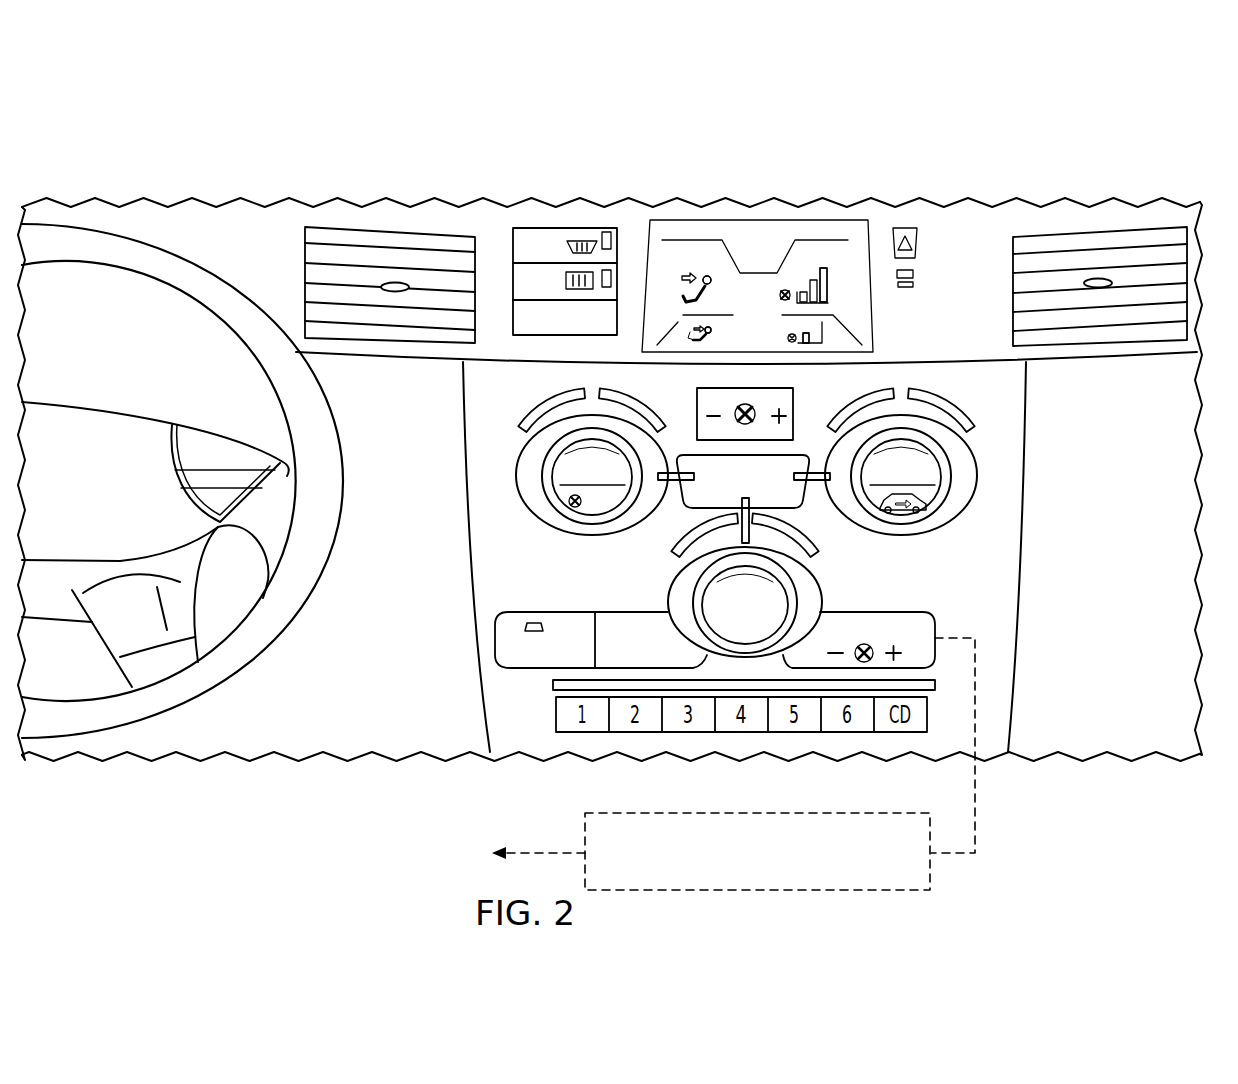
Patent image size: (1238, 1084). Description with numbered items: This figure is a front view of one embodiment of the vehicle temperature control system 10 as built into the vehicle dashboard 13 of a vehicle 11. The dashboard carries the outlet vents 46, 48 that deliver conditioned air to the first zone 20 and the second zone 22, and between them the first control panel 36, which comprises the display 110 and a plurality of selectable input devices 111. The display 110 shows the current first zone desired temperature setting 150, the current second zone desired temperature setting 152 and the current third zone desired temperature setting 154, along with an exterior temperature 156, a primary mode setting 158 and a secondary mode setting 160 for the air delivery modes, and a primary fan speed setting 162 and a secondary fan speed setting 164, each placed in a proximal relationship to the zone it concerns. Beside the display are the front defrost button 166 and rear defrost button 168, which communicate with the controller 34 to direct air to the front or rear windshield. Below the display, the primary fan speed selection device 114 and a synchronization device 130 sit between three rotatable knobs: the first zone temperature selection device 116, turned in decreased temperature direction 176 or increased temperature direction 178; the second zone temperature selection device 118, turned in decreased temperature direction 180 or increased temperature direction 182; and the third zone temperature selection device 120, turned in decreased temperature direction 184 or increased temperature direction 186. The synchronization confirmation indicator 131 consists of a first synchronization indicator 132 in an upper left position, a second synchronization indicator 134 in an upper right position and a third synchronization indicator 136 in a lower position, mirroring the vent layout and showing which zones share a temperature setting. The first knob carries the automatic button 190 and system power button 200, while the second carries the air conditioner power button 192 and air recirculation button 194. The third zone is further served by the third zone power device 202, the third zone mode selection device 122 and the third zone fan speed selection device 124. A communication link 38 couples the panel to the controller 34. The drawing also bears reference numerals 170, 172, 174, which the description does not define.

The vehicle temperature control system 10 is at (272, 150).
The vehicle 11 is at (417, 148).
The vehicle dashboard 13 is at (945, 187).
The first zone 20 is at (230, 756).
The second zone 22 is at (1098, 755).
The controller 34 is at (938, 872).
The first control panel 36 is at (585, 192).
The communication link 38 is at (980, 800).
The outlet vent 46 is at (305, 268).
The outlet vent 48 is at (1012, 262).
The display 110 is at (630, 198).
The selectable input devices 111 is at (492, 193).
The primary fan speed selection device 114 is at (797, 392).
The first zone temperature selection device 116 is at (545, 478).
The second zone temperature selection device 118 is at (952, 480).
The third zone temperature selection device 120 is at (800, 592).
The third zone mode selection device 122 is at (628, 612).
The third zone fan speed selection device 124 is at (935, 615).
The synchronization device 130 is at (800, 455).
The synchronization confirmation indicator 131 is at (665, 418).
The first synchronization indicator 132 is at (672, 472).
The second synchronization indicator 134 is at (810, 505).
The third synchronization indicator 136 is at (738, 512).
The current first zone desired temperature setting 150 is at (657, 237).
The current second zone desired temperature setting 152 is at (850, 243).
The current third zone desired temperature setting 154 is at (745, 340).
The exterior temperature 156 is at (757, 223).
The primary mode setting 158 is at (695, 272).
The secondary mode setting 160 is at (683, 323).
The primary fan speed setting 162 is at (807, 278).
The secondary fan speed setting 164 is at (835, 335).
The front defrost button 166 is at (513, 242).
The rear defrost button 168 is at (513, 290).
The driver control assembly 170 is at (483, 438).
The mode button / passenger control assembly 172 is at (513, 318).
The rear control assembly 174 is at (840, 594).
The decreased temperature direction 176 is at (540, 414).
The increased temperature direction 178 is at (595, 398).
The decreased temperature direction 180 is at (882, 398).
The increased temperature direction 182 is at (935, 406).
The decreased temperature direction 184 is at (688, 543).
The increased temperature direction 186 is at (806, 543).
The automatic button 190 is at (560, 467).
The air conditioner power button 192 is at (920, 470).
The air recirculation button 194 is at (935, 500).
The system power button 200 is at (565, 503).
The third zone power device 202 is at (540, 612).